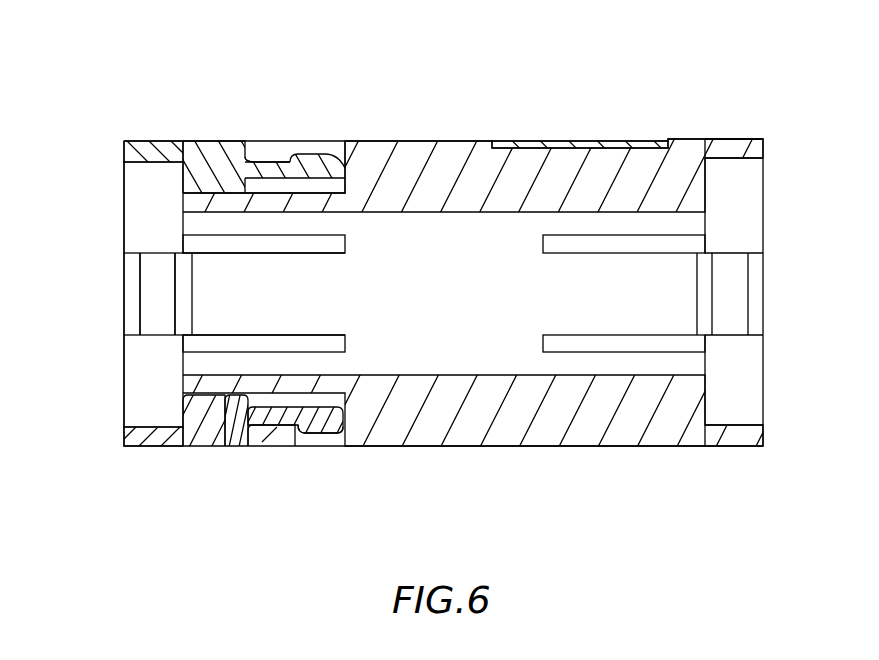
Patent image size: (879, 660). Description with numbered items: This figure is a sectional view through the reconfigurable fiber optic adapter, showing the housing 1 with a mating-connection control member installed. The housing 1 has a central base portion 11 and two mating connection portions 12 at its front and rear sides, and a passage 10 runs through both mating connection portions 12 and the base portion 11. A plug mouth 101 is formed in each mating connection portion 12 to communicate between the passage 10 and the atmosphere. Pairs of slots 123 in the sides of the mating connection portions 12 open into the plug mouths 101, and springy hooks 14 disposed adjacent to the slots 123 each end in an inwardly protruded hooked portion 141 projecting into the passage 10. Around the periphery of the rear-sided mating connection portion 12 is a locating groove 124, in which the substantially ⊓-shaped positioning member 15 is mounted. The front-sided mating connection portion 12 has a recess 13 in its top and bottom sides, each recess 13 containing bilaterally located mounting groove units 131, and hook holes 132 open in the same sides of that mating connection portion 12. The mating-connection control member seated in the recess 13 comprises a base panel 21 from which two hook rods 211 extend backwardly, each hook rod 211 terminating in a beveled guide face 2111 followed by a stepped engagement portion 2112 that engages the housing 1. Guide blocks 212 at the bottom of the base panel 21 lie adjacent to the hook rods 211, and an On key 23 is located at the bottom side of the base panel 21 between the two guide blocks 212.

The housing 1 is at (455, 96).
The passage 10 is at (283, 272).
The base portion 11 is at (452, 155).
The plug mouth 101 is at (132, 415).
The mating connection portion 12 is at (282, 440).
The slot 123 is at (208, 343).
The locating groove 124 is at (520, 145).
The recess 13 is at (226, 430).
The mounting groove unit 131 is at (225, 433).
The hook hole 132 is at (332, 438).
The springy hook 14 is at (240, 268).
The hooked portion 141 is at (150, 280).
The positioning member 15 is at (572, 145).
The base panel 21 is at (266, 178).
The hook rod 211 is at (273, 166).
The beveled guide face 2111 is at (322, 158).
The stepped engagement portion 2112 is at (306, 160).
The guide block 212 is at (209, 165).
The On key 23 is at (208, 413).